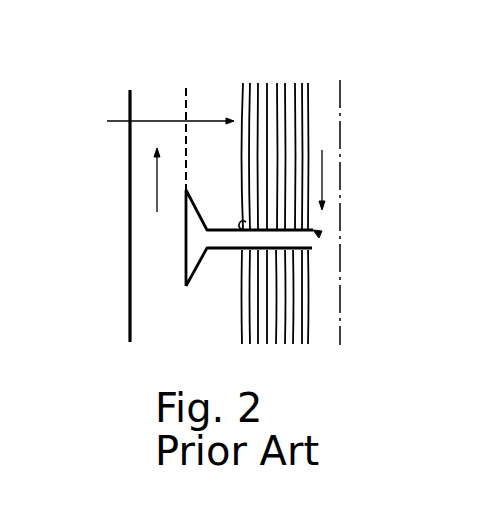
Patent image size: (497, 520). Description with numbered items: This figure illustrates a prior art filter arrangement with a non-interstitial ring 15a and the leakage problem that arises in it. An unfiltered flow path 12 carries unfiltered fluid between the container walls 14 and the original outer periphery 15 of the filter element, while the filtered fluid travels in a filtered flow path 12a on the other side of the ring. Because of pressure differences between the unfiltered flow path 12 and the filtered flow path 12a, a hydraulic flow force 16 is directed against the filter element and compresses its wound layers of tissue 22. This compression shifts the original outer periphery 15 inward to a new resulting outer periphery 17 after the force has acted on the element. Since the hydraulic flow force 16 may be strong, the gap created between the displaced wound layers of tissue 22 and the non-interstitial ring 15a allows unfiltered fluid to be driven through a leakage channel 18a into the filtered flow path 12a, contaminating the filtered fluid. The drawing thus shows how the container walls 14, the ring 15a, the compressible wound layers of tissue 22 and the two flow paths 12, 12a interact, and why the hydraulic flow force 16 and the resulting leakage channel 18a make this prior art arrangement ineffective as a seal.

The unfiltered flow path 12 is at (157, 192).
The filtered flow path 12a is at (322, 167).
The container walls 14 is at (130, 110).
The original outer periphery 15 is at (186, 100).
The non-interstitial ring 15a is at (186, 275).
The hydraulic flow force 16 is at (152, 122).
The resulting outer periphery 17 is at (242, 88).
The leakage channel 18a is at (318, 229).
The wound layers of tissue 22 is at (283, 84).